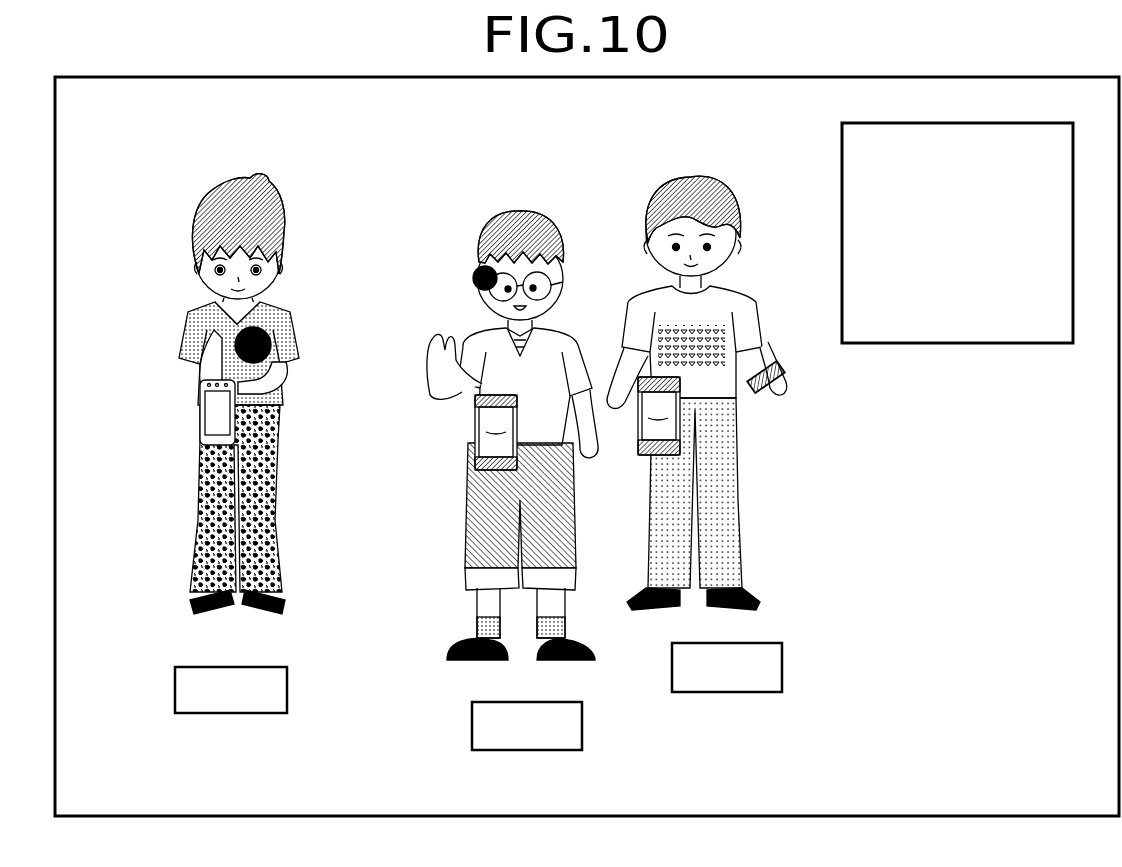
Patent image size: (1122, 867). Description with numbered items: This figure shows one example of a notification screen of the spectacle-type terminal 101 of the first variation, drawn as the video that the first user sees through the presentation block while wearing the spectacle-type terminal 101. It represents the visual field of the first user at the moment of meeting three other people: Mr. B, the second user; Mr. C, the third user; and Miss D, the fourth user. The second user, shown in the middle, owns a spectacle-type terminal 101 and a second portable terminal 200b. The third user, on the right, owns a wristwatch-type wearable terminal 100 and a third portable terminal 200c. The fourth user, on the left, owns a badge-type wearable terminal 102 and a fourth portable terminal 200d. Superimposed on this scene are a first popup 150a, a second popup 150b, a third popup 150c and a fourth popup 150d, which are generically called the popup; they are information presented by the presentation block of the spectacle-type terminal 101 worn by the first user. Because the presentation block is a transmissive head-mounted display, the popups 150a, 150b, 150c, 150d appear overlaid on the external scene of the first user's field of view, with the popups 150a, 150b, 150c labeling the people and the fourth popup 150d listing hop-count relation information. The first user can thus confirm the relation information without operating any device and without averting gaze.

The wristwatch-type wearable terminal 100 is at (794, 371).
The spectacle-type terminal 101 is at (466, 277).
The badge terminal 102 is at (286, 342).
The first popup 150a is at (584, 727).
The second popup 150b is at (784, 667).
The third popup 150c is at (288, 690).
The fourth popup 150d is at (841, 136).
The second portable terminal 200b is at (471, 436).
The third portable terminal 200c is at (692, 408).
The fourth portable terminal 200d is at (196, 411).